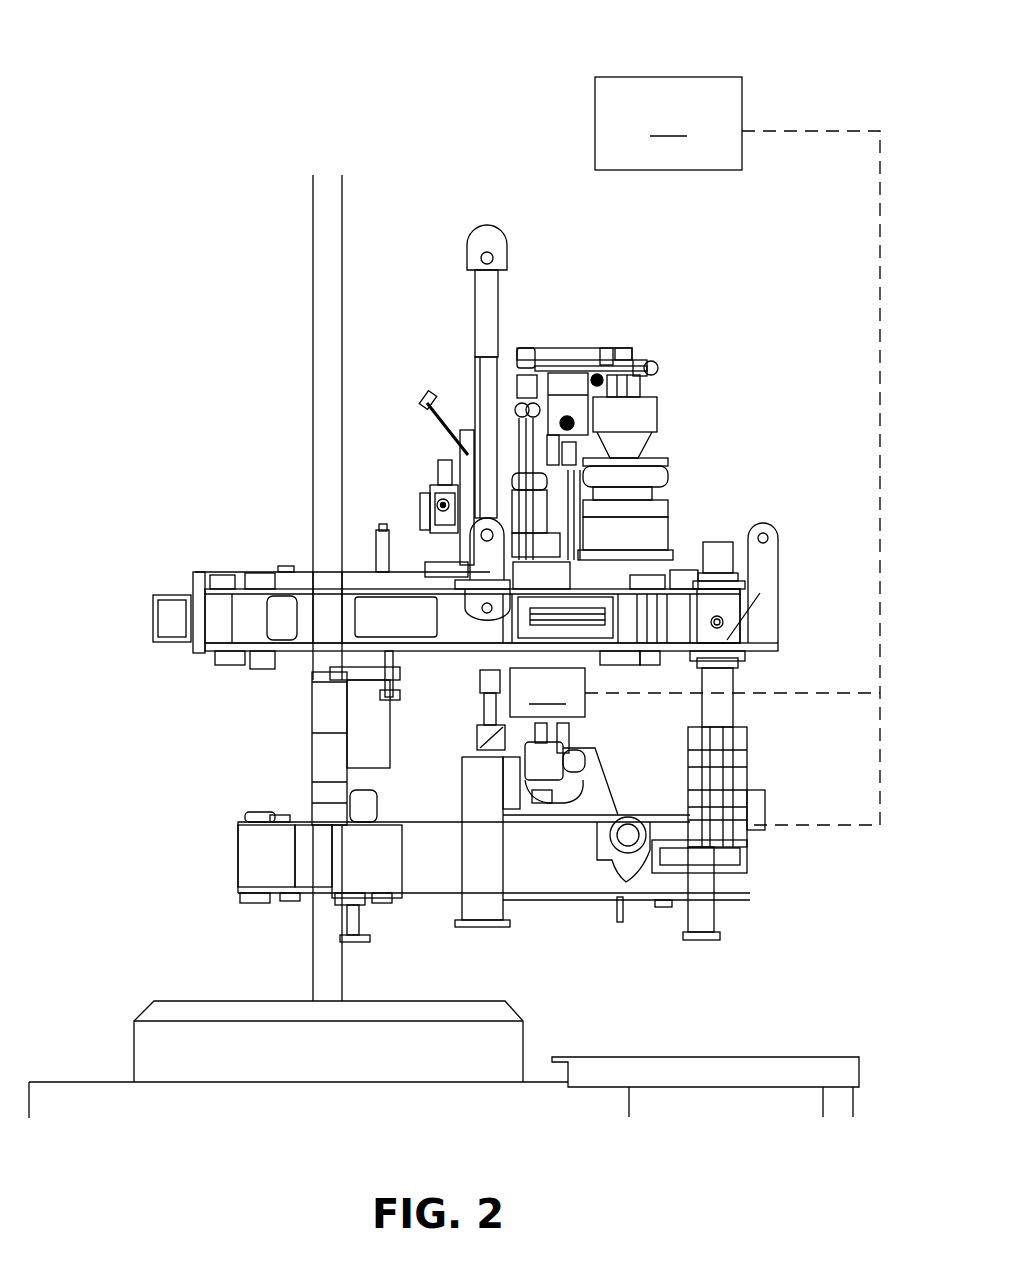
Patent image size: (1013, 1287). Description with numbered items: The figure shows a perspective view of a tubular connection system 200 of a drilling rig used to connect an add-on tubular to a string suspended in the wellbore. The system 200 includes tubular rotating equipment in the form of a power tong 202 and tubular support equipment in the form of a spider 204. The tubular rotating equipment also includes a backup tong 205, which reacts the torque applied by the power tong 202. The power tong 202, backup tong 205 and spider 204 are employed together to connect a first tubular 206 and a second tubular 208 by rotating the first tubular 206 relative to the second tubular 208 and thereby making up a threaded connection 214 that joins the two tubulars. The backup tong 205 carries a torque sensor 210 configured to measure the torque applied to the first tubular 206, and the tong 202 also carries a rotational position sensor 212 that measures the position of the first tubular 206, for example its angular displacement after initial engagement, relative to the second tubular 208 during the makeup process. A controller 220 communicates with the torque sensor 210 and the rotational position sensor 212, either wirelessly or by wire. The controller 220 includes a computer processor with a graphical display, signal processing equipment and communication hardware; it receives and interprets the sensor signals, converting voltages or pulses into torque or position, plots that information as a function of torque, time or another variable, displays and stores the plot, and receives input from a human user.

The tubular connection system 200 is at (110, 106).
The power tong 202 is at (725, 542).
The spider 204 is at (114, 996).
The backup tong 205 is at (247, 863).
The first tubular 206 is at (313, 338).
The second tubular 208 is at (313, 943).
The torque sensor 210 is at (738, 827).
The rotational position sensor 212 is at (547, 692).
The threaded connection 214 is at (312, 732).
The controller 220 is at (732, 451).